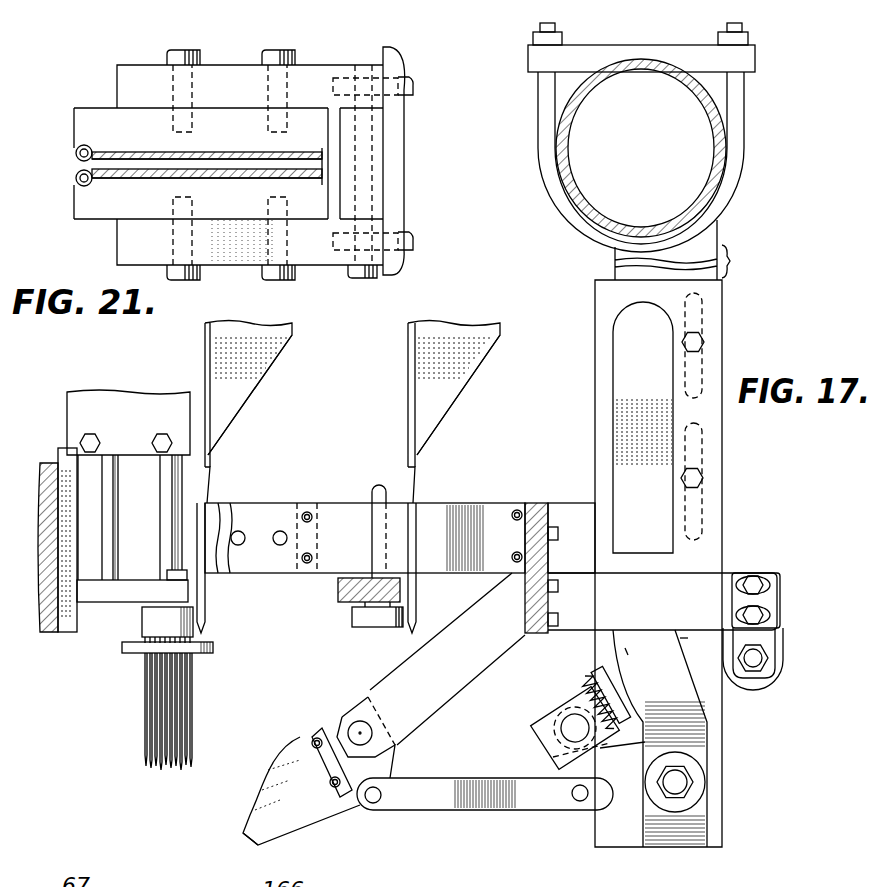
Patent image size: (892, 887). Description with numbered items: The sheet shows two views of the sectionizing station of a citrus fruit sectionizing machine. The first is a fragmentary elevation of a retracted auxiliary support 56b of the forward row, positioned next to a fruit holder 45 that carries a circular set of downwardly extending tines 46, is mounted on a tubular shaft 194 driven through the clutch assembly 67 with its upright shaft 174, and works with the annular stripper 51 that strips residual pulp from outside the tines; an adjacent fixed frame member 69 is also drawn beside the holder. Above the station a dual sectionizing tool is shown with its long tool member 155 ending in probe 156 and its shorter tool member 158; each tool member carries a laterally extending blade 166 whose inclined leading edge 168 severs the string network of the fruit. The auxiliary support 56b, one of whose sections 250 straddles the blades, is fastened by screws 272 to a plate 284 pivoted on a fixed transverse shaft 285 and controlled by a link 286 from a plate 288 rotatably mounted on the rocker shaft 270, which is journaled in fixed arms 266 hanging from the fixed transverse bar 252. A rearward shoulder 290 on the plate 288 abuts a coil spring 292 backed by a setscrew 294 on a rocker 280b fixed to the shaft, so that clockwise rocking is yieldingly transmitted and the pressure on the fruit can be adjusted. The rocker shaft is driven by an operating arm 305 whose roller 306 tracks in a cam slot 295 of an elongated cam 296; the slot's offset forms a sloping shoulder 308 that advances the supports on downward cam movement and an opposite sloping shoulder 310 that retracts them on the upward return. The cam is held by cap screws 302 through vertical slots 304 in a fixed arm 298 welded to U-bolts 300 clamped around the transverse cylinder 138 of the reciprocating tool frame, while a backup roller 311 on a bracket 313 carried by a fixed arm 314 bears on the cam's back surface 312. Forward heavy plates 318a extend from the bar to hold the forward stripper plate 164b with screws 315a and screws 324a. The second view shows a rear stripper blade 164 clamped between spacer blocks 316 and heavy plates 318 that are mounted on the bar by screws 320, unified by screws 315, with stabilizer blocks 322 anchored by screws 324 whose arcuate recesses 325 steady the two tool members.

In FIG. 17, the fruit holder 45 is at (135, 618).
In FIG. 17, the tines 46 is at (145, 713).
In FIG. 17, the annular stripper 51 is at (123, 650).
In FIG. 17, the auxiliary support 56b is at (268, 802).
In FIG. 17, the clutch assembly 67 is at (75, 390).
In FIG. 17, the wall 69 is at (45, 463).
In FIG. 17, the transverse cylinder 138 is at (700, 97).
In FIG. 21, the tool member 155 is at (70, 180).
In FIG. 17, the tool member 155 is at (193, 359).
In FIG. 17, the probe 156 is at (207, 475).
In FIG. 21, the tool member 158 is at (70, 153).
In FIG. 21, the stripper blade 164 is at (218, 157).
In FIG. 17, the stripper plate 164b is at (213, 513).
In FIG. 21, the blade 166 is at (145, 180).
In FIG. 17, the blade 166 is at (238, 392).
In FIG. 17, the inclined leading edge 168 is at (265, 372).
In FIG. 17, the upright shaft 174 is at (112, 515).
In FIG. 17, the tubular shaft 194 is at (165, 512).
In FIG. 17, the section 250 is at (310, 806).
In FIG. 21, the fixed transverse bar 252 is at (398, 145).
In FIG. 17, the fixed transverse bar 252 is at (537, 503).
In FIG. 17, the fixed arm 266 is at (567, 517).
In FIG. 17, the rocker shaft 270 is at (567, 730).
In FIG. 17, the screw 272 is at (310, 742).
In FIG. 17, the rocker 280b is at (649, 699).
In FIG. 17, the plate 284 is at (385, 765).
In FIG. 17, the fixed transverse shaft 285 is at (358, 721).
In FIG. 17, the link 286 is at (520, 797).
In FIG. 17, the plate 288 is at (595, 812).
In FIG. 17, the shoulder 290 is at (623, 740).
In FIG. 17, the coil spring 292 is at (607, 700).
In FIG. 17, the setscrew 294 is at (582, 682).
In FIG. 17, the cam slot 295 is at (614, 380).
In FIG. 17, the cam 296 is at (600, 298).
In FIG. 17, the fixed arm 298 is at (708, 237).
In FIG. 17, the U-bolt 300 is at (743, 88).
In FIG. 17, the cap screw 302 is at (700, 343).
In FIG. 17, the vertical slot 304 is at (698, 368).
In FIG. 17, the operating arm 305 is at (633, 790).
In FIG. 17, the roller 306 is at (687, 812).
In FIG. 17, the sloping shoulder 308 is at (663, 642).
In FIG. 17, the sloping shoulder 310 is at (625, 648).
In FIG. 17, the backup roller 311 is at (780, 653).
In FIG. 17, the back surface 312 is at (722, 563).
In FIG. 17, the bracket 313 is at (762, 638).
In FIG. 17, the fixed arm 314 is at (780, 583).
In FIG. 21, the screw 315 is at (365, 278).
In FIG. 17, the screw 315a is at (313, 557).
In FIG. 21, the spacer block 316 is at (378, 123).
In FIG. 21, the heavy plate 318 is at (318, 65).
In FIG. 17, the heavy plate 318a is at (282, 515).
In FIG. 21, the screw 320 is at (410, 80).
In FIG. 21, the stabilizer block 322 is at (85, 115).
In FIG. 21, the screw 324 is at (244, 48).
In FIG. 17, the screw 324a is at (240, 545).
In FIG. 21, the arcuate recess 325 is at (80, 145).